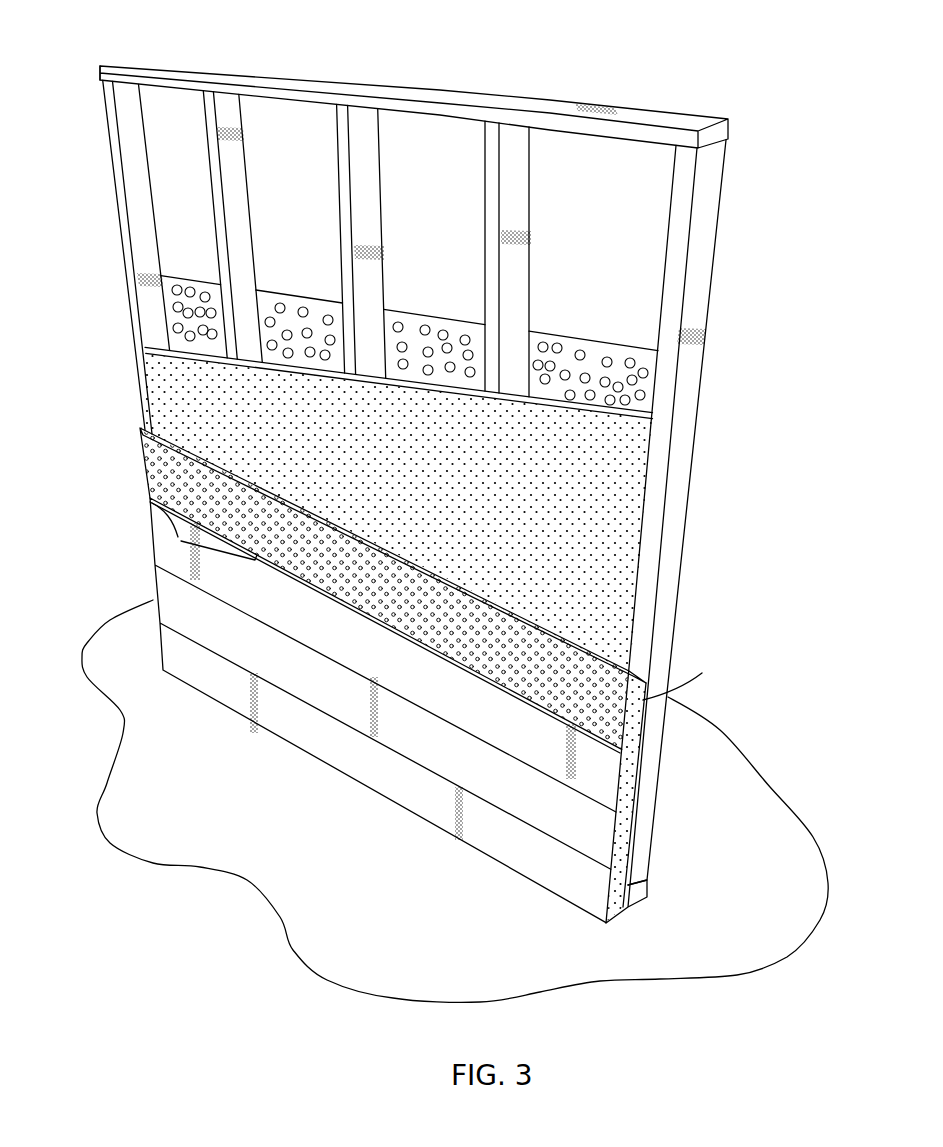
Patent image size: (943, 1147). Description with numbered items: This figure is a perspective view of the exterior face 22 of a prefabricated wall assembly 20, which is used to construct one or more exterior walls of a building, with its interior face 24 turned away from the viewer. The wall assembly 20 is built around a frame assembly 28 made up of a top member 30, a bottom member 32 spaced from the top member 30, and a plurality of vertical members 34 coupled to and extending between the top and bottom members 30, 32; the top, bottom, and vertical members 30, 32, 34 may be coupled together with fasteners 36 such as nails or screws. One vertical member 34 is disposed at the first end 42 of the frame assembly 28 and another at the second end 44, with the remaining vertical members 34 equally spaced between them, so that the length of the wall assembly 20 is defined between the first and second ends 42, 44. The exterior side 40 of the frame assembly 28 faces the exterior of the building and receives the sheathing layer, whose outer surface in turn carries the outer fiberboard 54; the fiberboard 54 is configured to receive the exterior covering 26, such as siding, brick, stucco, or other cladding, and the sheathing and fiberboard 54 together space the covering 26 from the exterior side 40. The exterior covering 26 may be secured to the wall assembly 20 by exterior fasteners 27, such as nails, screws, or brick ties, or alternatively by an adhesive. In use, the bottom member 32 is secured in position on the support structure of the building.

The wall assembly 20 is at (749, 130).
The exterior face 22 is at (114, 566).
The interior face 24 is at (712, 488).
The exterior covering 26 is at (598, 887).
The exterior fasteners 27 is at (193, 541).
The frame assembly 28 is at (746, 223).
The top member 30 is at (574, 113).
The bottom member 32 is at (647, 897).
The vertical members 34 is at (148, 213).
The fasteners 36 is at (113, 64).
The exterior side 40 is at (122, 294).
The first end 42 is at (94, 190).
The second end 44 is at (724, 293).
The outer fiberboard 54 is at (157, 473).